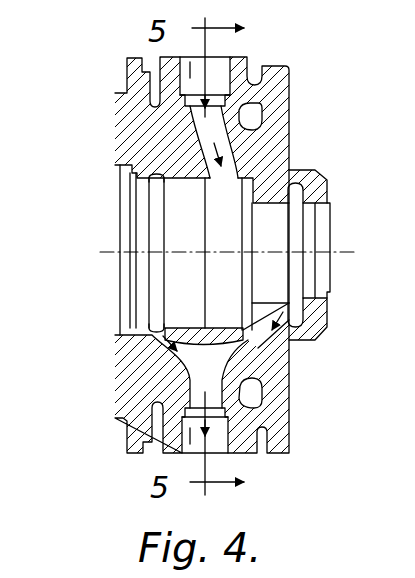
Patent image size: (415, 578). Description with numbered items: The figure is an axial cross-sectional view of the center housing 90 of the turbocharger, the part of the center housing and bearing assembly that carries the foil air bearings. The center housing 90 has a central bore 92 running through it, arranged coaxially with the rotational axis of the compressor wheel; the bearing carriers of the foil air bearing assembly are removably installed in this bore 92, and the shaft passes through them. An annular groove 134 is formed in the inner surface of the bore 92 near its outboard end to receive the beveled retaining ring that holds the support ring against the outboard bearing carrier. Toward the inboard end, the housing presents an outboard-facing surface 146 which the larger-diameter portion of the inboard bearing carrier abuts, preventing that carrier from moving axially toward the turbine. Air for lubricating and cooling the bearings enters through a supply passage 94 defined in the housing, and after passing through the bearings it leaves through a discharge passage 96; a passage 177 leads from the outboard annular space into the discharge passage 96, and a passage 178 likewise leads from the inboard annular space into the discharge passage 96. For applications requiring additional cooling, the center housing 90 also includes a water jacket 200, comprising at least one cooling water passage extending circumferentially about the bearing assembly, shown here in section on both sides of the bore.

The center housing 90 is at (314, 44).
The bore 92 is at (182, 325).
The supply passage 94 is at (212, 67).
The discharge passage 96 is at (220, 443).
The annular groove 134 is at (138, 165).
The outboard-facing surface 146 is at (247, 303).
The passage 177 is at (168, 343).
The passage 178 is at (262, 340).
The water jacket 200 is at (250, 116).